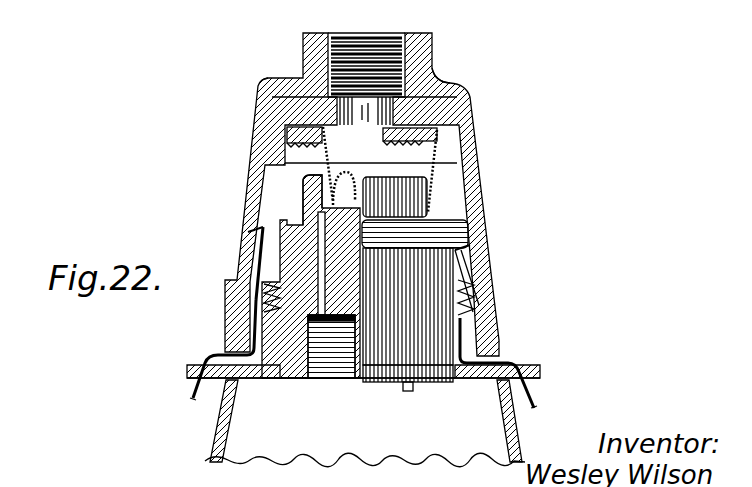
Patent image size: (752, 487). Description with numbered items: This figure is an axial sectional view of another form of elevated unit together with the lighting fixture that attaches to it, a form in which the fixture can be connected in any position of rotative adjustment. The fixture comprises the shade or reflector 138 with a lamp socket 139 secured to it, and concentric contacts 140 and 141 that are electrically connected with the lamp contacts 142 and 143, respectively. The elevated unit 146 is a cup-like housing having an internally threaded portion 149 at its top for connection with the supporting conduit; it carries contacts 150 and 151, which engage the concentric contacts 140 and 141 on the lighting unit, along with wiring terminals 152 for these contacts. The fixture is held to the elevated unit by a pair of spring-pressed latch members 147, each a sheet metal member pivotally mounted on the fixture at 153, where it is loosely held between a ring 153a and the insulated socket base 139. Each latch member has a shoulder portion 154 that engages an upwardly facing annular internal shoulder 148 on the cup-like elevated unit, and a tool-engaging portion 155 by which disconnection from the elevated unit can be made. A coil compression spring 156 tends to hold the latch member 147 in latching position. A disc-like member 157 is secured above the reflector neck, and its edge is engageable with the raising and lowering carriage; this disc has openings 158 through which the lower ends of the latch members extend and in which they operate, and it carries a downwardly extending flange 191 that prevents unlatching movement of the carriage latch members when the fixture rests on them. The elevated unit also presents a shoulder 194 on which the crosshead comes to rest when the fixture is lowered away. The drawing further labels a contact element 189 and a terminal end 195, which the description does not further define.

The shade or reflector 138 is at (517, 447).
The lamp socket 139 is at (292, 340).
The concentric contact 140 is at (303, 188).
The concentric contact 141 is at (260, 150).
The lamp contact 142 is at (335, 366).
The lamp contact 143 is at (405, 378).
The elevated unit 146 is at (476, 126).
The spring-pressed latch member 147 is at (262, 270).
The annular internal shoulder 148 is at (252, 322).
The internally threaded portion 149 is at (432, 52).
The contact 150 is at (282, 163).
The contact 151 is at (440, 178).
The wiring terminal 152 is at (256, 88).
The pivotal mounting 153 is at (262, 225).
The ring 153a is at (486, 222).
The shoulder portion 154 is at (262, 310).
The tool-engaging portion 155 is at (215, 358).
The coil compression spring 156 is at (262, 252).
The disc-like member 157 is at (526, 372).
The opening 158 is at (200, 400).
The contact 189 is at (552, 279).
The downwardly extending flange 191 is at (520, 385).
The shoulder 194 is at (478, 298).
The terminal end 195 is at (200, 383).